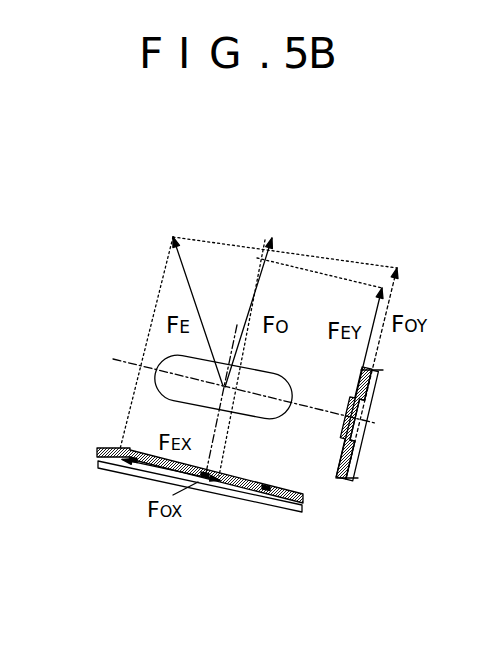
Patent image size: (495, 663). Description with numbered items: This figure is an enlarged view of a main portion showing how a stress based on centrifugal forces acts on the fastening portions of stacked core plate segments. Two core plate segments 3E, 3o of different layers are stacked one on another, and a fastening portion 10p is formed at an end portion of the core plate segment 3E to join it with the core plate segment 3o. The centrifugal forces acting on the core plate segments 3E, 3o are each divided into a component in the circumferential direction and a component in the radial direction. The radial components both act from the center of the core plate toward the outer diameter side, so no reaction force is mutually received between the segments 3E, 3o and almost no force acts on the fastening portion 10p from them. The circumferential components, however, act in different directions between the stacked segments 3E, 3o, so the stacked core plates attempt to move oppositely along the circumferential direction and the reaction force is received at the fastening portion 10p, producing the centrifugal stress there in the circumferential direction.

The fastening portion 10p is at (137, 340).
The core plate segment 3E is at (112, 447).
The core plate segment 3o is at (132, 470).